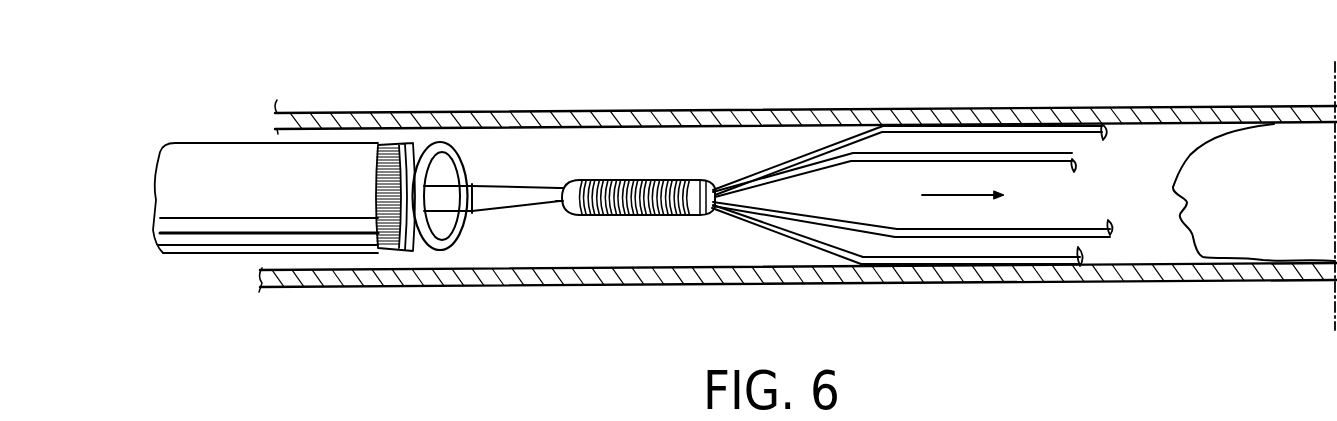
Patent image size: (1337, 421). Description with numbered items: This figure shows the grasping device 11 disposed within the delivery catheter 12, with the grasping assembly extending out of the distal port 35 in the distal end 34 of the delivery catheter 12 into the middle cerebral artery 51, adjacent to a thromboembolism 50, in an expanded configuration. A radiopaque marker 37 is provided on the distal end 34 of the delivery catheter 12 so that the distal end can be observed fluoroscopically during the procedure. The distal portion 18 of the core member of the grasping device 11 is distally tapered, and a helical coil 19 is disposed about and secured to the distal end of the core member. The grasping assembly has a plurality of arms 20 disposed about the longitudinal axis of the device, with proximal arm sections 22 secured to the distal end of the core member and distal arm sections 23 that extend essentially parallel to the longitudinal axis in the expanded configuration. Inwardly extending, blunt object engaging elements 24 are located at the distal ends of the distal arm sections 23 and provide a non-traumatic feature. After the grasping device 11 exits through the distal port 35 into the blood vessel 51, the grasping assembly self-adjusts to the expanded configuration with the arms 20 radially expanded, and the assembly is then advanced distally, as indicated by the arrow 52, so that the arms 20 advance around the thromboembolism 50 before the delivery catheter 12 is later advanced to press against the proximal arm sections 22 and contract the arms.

The grasping device 11 is at (544, 184).
The delivery catheter 12 is at (228, 143).
The distal portion of the core member 18 is at (490, 197).
The helical coil 19 is at (645, 179).
The arms 20 is at (945, 265).
The proximal arm sections 22 is at (822, 140).
The distal arm sections 23 is at (1012, 263).
The object engaging elements 24 is at (1106, 141).
The distal end of the delivery catheter 34 is at (443, 250).
The distal port 35 is at (442, 175).
The radiopaque marker 37 is at (402, 146).
The thromboembolism 50 is at (1281, 207).
The middle cerebral artery 51 is at (1147, 108).
The arrow 52 is at (923, 194).